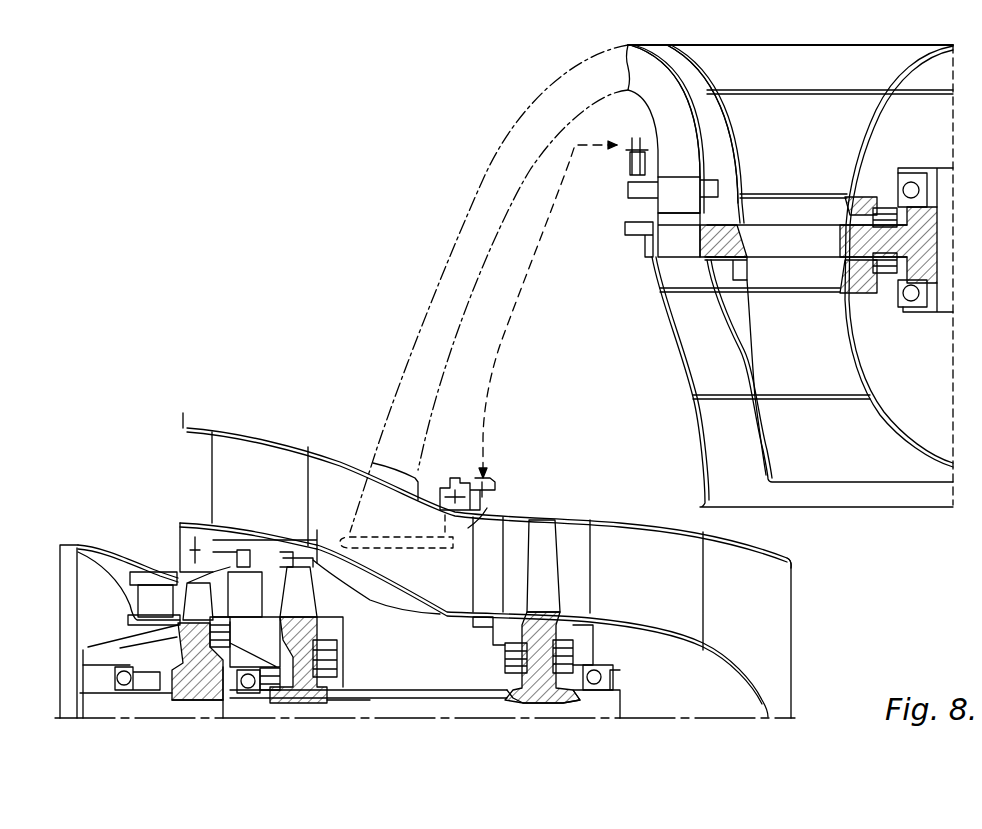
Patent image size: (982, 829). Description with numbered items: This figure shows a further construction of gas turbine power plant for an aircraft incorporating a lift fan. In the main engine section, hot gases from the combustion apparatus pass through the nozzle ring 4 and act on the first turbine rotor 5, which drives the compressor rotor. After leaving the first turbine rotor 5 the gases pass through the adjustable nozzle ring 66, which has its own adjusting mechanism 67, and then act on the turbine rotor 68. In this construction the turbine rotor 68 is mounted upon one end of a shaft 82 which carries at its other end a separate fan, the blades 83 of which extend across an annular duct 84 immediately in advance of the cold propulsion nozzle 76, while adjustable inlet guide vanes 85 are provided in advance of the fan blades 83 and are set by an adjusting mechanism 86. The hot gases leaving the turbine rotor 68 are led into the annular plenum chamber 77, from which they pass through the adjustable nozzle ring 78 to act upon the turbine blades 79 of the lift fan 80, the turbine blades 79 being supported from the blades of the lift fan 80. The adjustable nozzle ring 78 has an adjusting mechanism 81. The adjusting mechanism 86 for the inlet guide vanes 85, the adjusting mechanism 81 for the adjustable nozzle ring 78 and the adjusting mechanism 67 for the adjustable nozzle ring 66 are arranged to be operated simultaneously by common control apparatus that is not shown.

The nozzle ring 4 is at (160, 610).
The first turbine rotor 5 is at (200, 610).
The adjustable nozzle ring 66 is at (258, 605).
The adjusting mechanism 67 is at (205, 548).
The turbine rotor 68 is at (308, 603).
The cold propulsion nozzle 76 is at (790, 630).
The annular plenum chamber 77 is at (680, 98).
The adjustable nozzle ring 78 is at (692, 203).
The turbine blades 79 is at (696, 255).
The lift fan 80 is at (807, 253).
The adjusting mechanism 81 is at (628, 158).
The shaft 82 is at (421, 690).
The fan blades 83 is at (556, 570).
The annular duct 84 is at (515, 527).
The adjustable inlet guide vanes 85 is at (502, 570).
The adjusting mechanism 86 is at (455, 500).